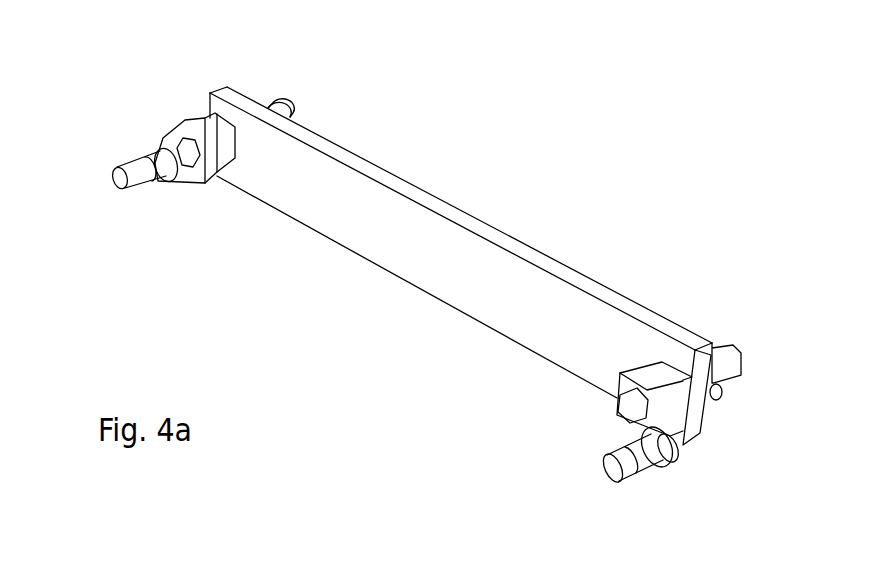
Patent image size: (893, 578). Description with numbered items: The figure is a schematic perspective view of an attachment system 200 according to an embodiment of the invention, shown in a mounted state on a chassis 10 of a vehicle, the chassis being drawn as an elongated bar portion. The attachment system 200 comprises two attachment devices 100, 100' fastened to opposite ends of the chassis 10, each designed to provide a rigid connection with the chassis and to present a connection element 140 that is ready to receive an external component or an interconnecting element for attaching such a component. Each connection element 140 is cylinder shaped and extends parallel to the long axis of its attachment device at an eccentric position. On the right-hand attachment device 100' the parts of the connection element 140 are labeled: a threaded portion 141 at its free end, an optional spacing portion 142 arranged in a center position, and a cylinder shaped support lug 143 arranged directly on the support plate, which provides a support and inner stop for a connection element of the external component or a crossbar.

The attachment system 200 is at (528, 150).
The chassis 10 is at (610, 238).
The attachment device 100 is at (172, 98).
The attachment device 100' is at (456, 332).
The connection element 140 is at (710, 577).
The threaded portion 141 is at (624, 451).
The spacing portion 142 is at (641, 441).
The support lug 143 is at (718, 492).